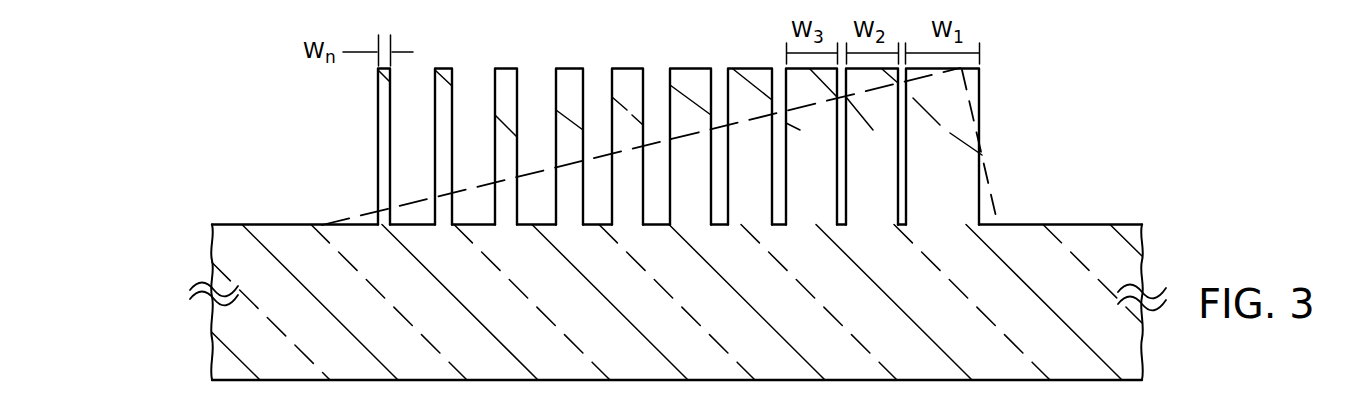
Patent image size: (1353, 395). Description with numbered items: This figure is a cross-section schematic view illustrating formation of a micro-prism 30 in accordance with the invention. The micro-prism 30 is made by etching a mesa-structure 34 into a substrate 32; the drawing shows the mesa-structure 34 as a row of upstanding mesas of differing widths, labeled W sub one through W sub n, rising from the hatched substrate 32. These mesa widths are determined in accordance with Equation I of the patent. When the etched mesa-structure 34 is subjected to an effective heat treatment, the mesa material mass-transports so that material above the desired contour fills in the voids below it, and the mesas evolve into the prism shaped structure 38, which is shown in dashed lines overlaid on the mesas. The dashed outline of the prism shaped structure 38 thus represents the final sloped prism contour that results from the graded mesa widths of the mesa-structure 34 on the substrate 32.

The micro-prism 30 is at (680, 112).
The substrate 32 is at (705, 316).
The mesa-structure 34 is at (627, 68).
The prism shaped structure 38 is at (988, 172).